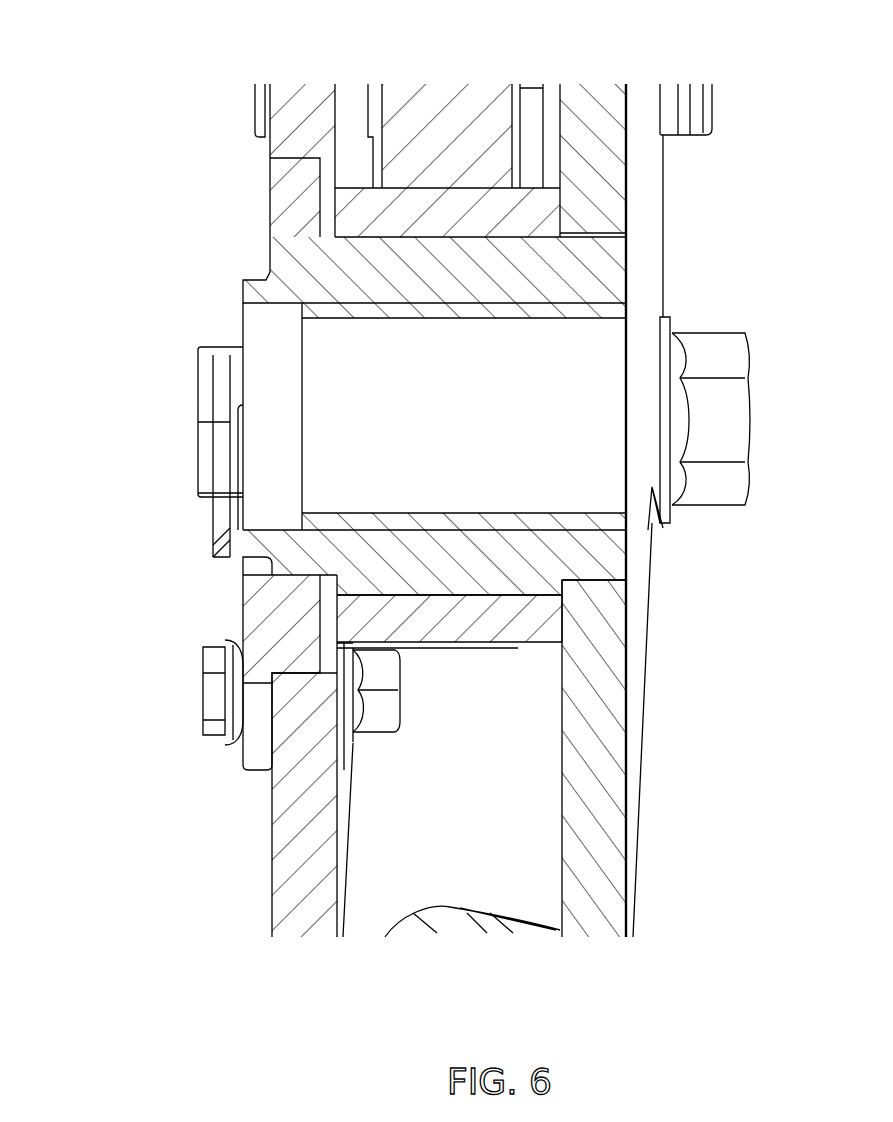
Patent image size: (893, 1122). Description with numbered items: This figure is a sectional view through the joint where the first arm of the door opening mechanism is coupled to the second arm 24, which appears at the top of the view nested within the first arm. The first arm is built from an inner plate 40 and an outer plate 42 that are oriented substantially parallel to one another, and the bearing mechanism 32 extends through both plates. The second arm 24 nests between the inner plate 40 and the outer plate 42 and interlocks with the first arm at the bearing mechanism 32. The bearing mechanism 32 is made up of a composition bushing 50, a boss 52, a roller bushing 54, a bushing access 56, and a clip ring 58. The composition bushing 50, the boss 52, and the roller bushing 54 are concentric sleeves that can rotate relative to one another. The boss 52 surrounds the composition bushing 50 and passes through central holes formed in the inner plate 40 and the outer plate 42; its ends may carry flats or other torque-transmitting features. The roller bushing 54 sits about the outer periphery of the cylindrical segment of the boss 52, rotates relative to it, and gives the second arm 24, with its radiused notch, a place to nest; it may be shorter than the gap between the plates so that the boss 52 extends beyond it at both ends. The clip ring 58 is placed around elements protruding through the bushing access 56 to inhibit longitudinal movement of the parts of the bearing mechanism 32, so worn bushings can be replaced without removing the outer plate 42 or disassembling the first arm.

The second arm 24 is at (460, 105).
The bearing mechanism 32 is at (155, 455).
The inner plate 40 is at (600, 107).
The outer plate 42 is at (212, 157).
The composition bushing 50 is at (625, 307).
The boss 52 is at (605, 272).
The roller bushing 54 is at (505, 618).
The bushing access 56 is at (238, 615).
The clip ring 58 is at (220, 373).